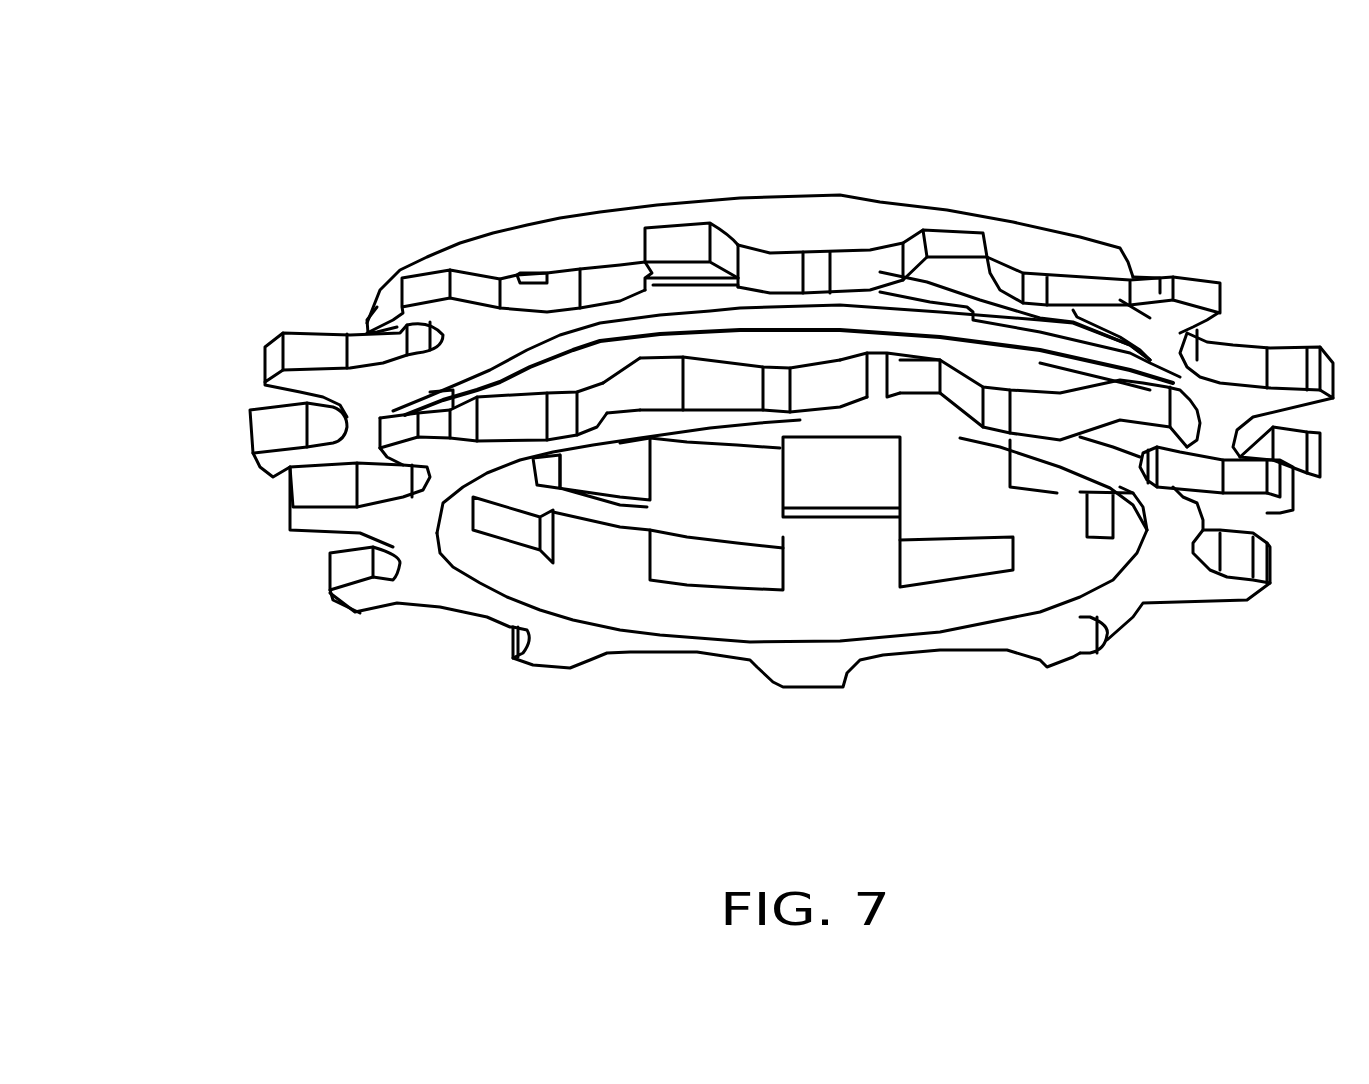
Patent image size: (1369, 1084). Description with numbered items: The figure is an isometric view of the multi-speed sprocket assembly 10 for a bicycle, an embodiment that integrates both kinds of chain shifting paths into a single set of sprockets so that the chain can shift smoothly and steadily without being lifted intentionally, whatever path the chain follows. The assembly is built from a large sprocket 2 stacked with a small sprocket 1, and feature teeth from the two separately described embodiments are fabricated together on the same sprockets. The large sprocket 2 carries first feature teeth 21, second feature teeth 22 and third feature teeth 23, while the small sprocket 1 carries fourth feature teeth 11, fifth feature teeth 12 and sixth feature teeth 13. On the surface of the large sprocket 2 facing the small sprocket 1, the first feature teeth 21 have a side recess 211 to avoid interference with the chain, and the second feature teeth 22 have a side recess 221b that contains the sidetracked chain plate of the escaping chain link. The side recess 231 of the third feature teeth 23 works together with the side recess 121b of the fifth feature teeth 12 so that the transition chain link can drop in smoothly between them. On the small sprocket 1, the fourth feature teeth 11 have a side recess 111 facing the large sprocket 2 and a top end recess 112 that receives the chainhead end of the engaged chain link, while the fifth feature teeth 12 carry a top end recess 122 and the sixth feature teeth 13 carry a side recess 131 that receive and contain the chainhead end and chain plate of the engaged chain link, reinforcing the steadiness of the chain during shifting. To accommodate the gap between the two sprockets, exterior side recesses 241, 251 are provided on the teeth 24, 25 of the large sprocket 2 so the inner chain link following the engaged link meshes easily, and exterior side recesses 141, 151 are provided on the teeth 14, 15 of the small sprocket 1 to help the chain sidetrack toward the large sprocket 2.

The multi-speed sprocket assembly 10 is at (273, 170).
The small sprocket 1 is at (323, 578).
The large sprocket 2 is at (245, 425).
The fourth feature teeth 11 is at (917, 377).
The side recess 111 is at (860, 357).
The top end recess 112 is at (870, 367).
The fifth feature teeth 12 is at (640, 378).
The side recess 121b is at (684, 367).
The top end recess 122 is at (605, 392).
The sixth feature teeth 13 is at (392, 427).
The side recess 131 is at (447, 407).
The teeth 14 is at (1285, 500).
The exterior side recess 141 is at (1235, 507).
The teeth 15 is at (1153, 407).
The exterior side recess 151 is at (1113, 457).
The first feature teeth 21 is at (1197, 290).
The side recess 211 is at (1150, 320).
The second feature teeth 22 is at (952, 242).
The side recess 221b is at (957, 280).
The third feature teeth 23 is at (680, 240).
The side recess 231 is at (663, 270).
The teeth 24 is at (430, 283).
The exterior side recess 241 is at (533, 278).
The teeth 25 is at (273, 350).
The exterior side recess 251 is at (373, 333).